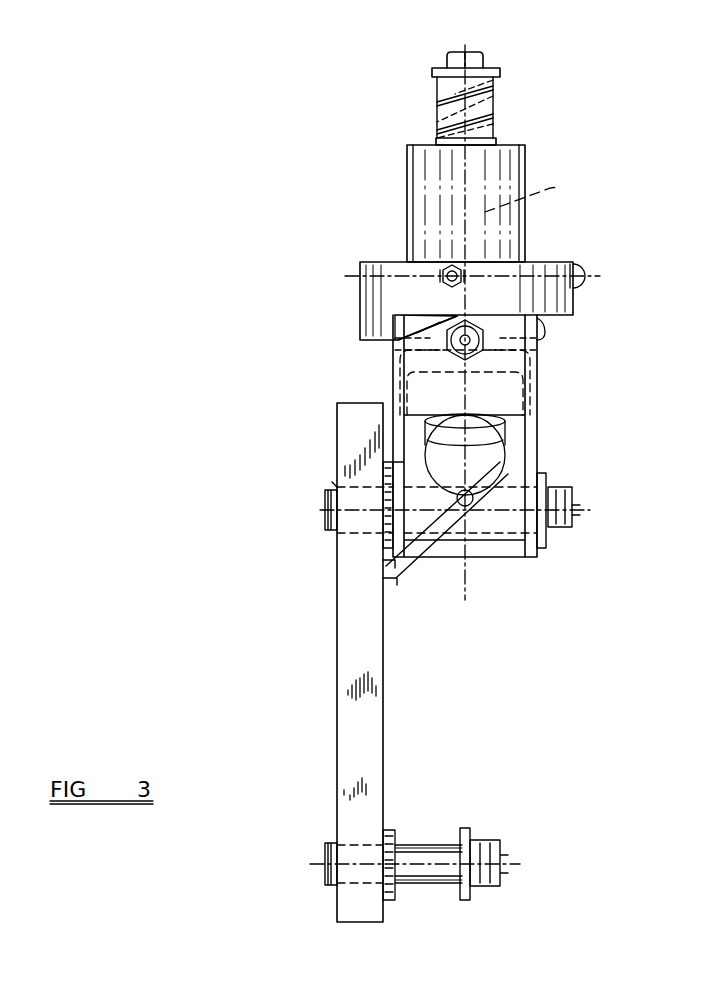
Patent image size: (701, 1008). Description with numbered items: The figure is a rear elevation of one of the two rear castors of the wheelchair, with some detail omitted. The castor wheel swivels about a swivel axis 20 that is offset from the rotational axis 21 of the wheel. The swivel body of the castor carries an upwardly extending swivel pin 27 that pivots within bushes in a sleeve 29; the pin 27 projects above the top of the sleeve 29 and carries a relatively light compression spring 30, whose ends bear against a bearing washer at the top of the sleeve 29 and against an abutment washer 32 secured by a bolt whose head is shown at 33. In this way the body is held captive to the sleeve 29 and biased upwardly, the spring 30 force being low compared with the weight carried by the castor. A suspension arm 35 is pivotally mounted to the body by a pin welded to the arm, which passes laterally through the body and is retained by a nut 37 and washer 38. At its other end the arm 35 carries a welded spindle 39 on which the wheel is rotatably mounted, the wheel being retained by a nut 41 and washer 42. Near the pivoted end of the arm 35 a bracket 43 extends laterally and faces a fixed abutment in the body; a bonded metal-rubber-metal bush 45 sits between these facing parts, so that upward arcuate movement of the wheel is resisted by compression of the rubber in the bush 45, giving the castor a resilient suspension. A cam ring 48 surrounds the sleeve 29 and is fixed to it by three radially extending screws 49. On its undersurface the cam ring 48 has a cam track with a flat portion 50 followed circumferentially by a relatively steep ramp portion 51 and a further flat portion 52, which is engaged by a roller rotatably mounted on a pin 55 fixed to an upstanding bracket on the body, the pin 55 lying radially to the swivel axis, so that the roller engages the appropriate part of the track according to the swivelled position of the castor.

The swivel axis 20 is at (560, 190).
The rotational axis 21 is at (428, 872).
The swivel pin 27 is at (437, 101).
The sleeve 29 is at (407, 209).
The compression spring 30 is at (438, 130).
The abutment washer 32 is at (432, 73).
The bolt head 33 is at (485, 62).
The suspension arm 35 is at (340, 694).
The nut 37 is at (577, 508).
The washer 38 is at (549, 530).
The spindle 39 is at (428, 853).
The nut 41 is at (505, 865).
The washer 42 is at (468, 835).
The bracket 43 is at (412, 570).
The bonded metal-rubber-metal bush 45 is at (520, 445).
The cam ring 48 is at (372, 305).
The radially extending screws 49 is at (461, 262).
The flat portion 50 is at (540, 338).
The steeply inclined ramp portion 51 is at (412, 334).
The further flat portion 52 is at (390, 340).
The pin 55 is at (540, 355).